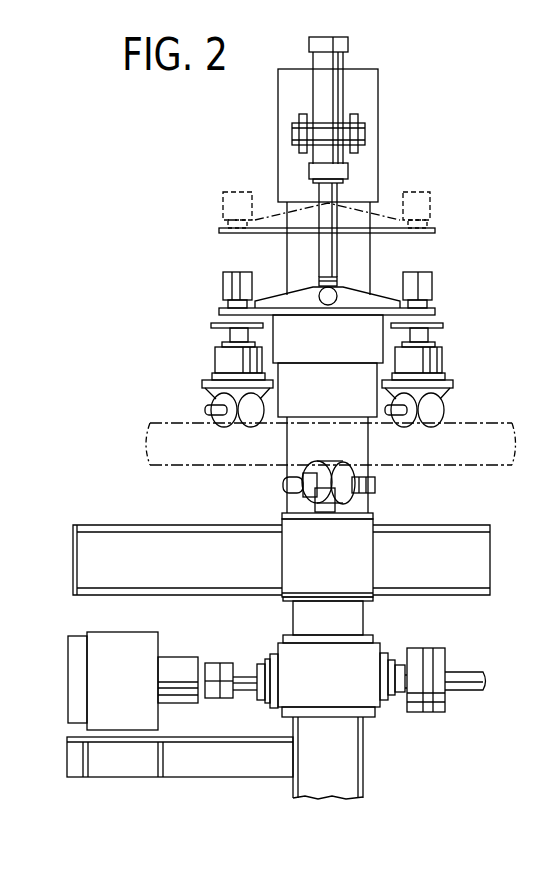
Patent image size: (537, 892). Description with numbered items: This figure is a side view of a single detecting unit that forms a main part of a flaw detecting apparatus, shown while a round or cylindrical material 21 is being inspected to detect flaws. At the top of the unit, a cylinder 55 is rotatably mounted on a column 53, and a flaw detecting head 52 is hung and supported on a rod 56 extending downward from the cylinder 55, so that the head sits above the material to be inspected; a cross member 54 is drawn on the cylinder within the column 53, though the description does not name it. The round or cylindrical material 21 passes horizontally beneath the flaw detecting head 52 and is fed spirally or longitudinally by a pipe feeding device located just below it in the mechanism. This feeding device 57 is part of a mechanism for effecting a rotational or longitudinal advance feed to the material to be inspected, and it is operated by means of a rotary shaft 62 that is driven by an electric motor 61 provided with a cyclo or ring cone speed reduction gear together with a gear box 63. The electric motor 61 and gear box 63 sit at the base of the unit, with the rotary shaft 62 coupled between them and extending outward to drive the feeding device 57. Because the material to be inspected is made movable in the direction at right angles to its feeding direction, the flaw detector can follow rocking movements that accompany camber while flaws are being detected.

The round or cylindrical material 21 is at (448, 438).
The flaw detecting head 52 is at (360, 378).
The column 53 is at (368, 167).
The cross shaft 54 is at (333, 127).
The cylinder 55 is at (333, 93).
The rod 56 is at (328, 262).
The feeding device 57 is at (315, 480).
The electric motor 61 is at (125, 647).
The rotary shaft 62 is at (245, 673).
The gear box 63 is at (357, 693).